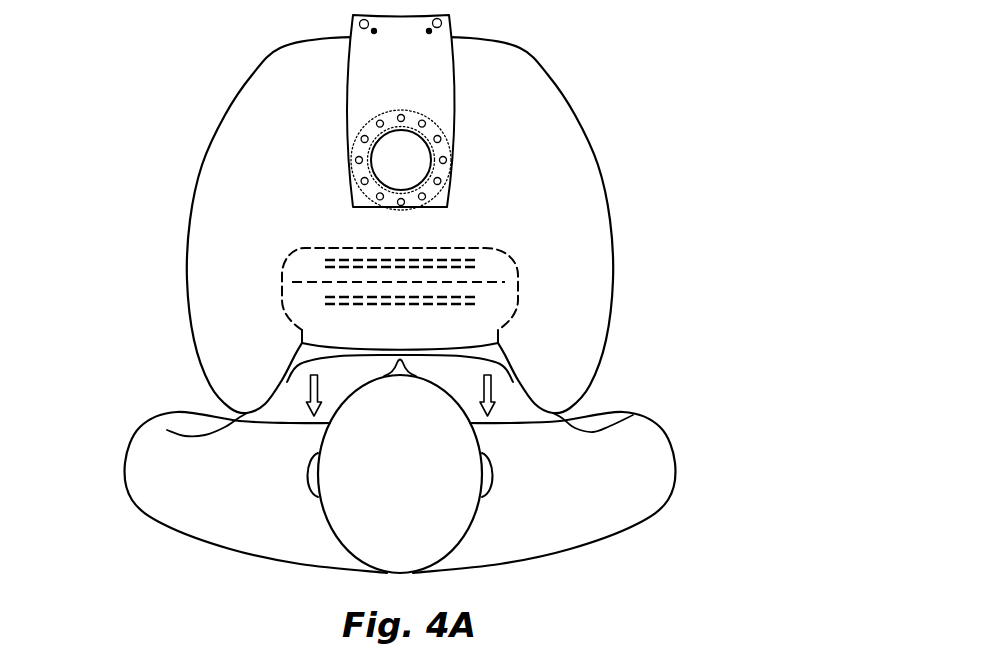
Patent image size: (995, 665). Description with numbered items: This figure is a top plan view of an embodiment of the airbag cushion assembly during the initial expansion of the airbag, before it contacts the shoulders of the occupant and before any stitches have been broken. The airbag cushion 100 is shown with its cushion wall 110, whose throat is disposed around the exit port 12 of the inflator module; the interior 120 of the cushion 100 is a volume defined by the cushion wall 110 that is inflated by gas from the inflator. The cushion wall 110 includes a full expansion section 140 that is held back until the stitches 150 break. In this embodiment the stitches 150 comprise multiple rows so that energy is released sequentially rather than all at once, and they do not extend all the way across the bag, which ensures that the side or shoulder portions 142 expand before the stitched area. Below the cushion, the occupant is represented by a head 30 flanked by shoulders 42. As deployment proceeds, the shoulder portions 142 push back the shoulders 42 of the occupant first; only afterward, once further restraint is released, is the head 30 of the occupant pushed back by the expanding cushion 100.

The airbag cushion 100 is at (401, 218).
The cushion wall 110 is at (440, 225).
The interior 120 is at (555, 123).
The exit port 12 is at (412, 171).
The full expansion section 140 is at (513, 303).
The stitches 150 is at (484, 268).
The shoulder portions 142 is at (633, 415).
The head 30 is at (409, 489).
The shoulders 42 is at (212, 492).